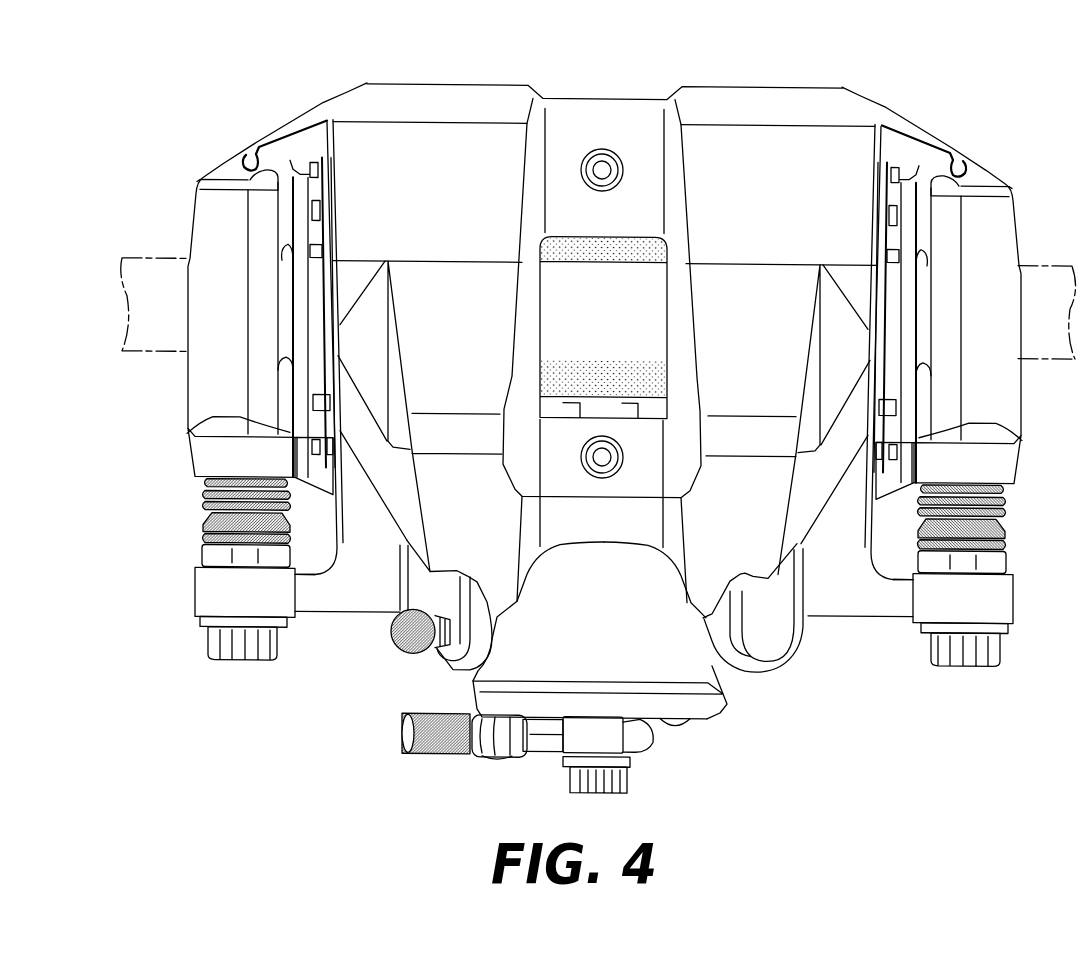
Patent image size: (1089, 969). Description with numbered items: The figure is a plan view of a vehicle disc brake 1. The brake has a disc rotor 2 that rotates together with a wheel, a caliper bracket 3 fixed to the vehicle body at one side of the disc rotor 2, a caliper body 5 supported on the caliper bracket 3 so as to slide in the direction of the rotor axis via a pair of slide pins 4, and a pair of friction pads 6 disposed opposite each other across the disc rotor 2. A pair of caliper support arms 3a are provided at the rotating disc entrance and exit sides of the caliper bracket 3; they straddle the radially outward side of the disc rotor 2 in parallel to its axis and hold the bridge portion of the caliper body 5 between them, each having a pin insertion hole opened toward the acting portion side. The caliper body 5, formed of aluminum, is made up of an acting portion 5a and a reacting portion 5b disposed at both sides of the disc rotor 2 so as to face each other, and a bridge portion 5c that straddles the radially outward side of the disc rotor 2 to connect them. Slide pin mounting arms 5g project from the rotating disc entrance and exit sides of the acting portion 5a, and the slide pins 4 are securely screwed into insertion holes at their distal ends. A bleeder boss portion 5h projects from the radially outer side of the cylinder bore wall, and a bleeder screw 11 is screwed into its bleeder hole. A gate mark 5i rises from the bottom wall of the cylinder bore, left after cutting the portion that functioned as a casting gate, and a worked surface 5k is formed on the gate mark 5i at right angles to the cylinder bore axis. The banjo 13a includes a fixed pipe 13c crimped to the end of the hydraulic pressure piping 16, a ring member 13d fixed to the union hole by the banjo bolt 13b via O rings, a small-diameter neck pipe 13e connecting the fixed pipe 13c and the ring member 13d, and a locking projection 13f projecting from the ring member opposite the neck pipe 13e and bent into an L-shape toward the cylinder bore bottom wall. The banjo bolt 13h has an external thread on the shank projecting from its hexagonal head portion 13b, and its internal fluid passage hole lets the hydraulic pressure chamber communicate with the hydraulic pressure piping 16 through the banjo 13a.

The vehicle disc brake 1 is at (598, 430).
The disc rotor 2 is at (1062, 255).
The caliper bracket 3 is at (603, 291).
The caliper support arm 3a is at (197, 404).
The slide pin 4 is at (203, 558).
The caliper body 5 is at (604, 420).
The acting portion 5a is at (727, 704).
The reacting portion 5b is at (768, 98).
The bridge portion 5c is at (697, 303).
The slide pin mounting arm 5g is at (333, 615).
The bleeder boss portion 5h is at (418, 667).
The gate mark 5i is at (497, 758).
The worked surface 5k is at (667, 702).
The friction pad 6 is at (616, 264).
The bleeder screw 11 is at (453, 584).
The banjo 13a is at (589, 732).
The banjo bolt 13b is at (642, 789).
The fixed pipe 13c is at (512, 720).
The ring member 13d is at (597, 730).
The neck pipe 13e is at (552, 727).
The locking projection 13f is at (648, 727).
The banjo bolt 13h is at (634, 771).
The hydraulic pressure piping 16 is at (410, 747).